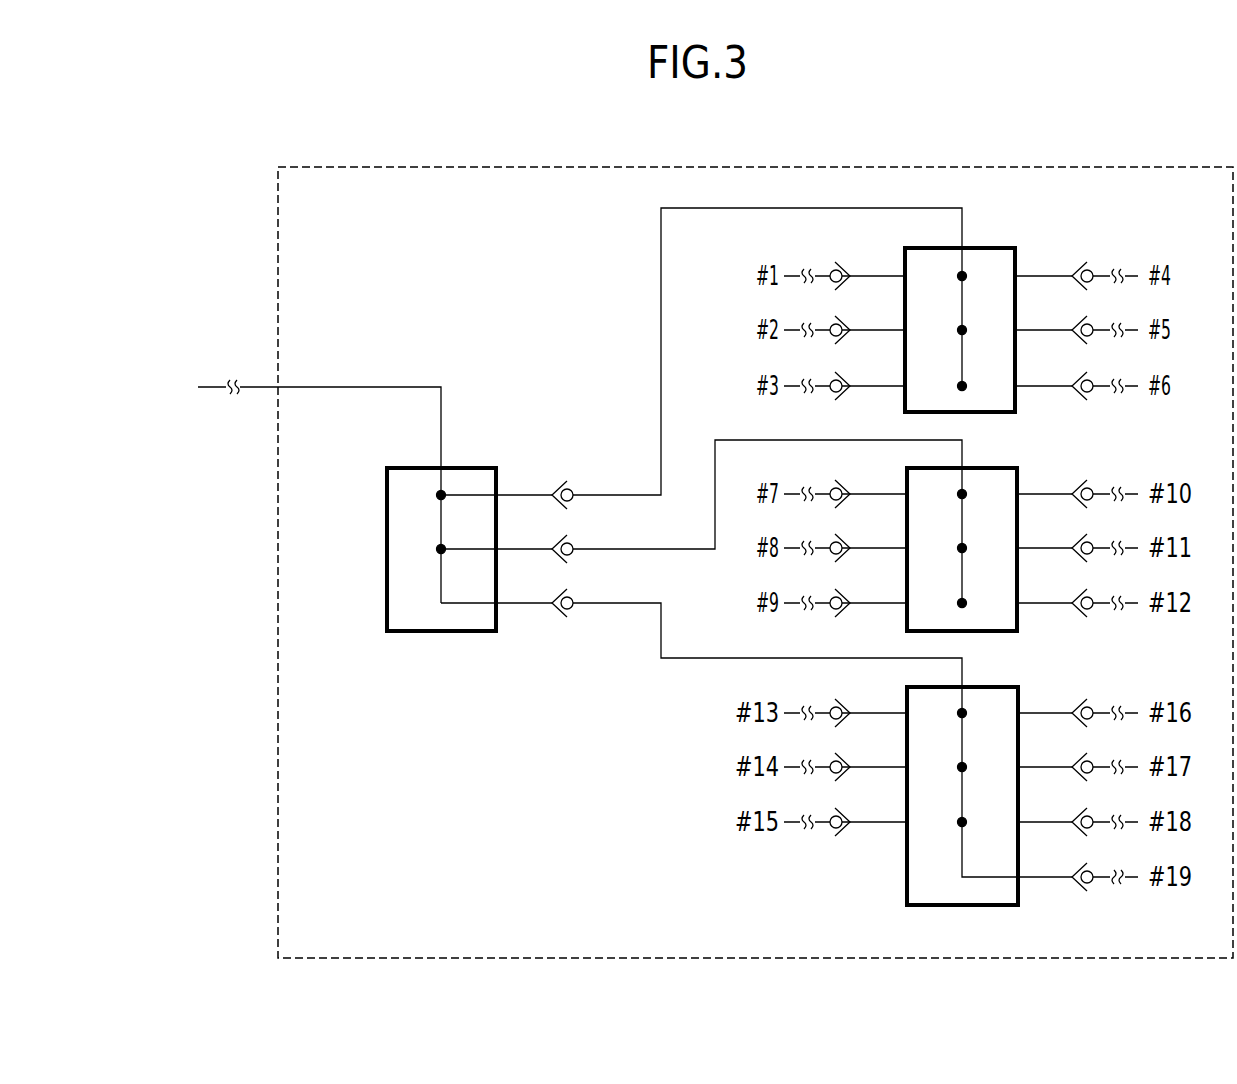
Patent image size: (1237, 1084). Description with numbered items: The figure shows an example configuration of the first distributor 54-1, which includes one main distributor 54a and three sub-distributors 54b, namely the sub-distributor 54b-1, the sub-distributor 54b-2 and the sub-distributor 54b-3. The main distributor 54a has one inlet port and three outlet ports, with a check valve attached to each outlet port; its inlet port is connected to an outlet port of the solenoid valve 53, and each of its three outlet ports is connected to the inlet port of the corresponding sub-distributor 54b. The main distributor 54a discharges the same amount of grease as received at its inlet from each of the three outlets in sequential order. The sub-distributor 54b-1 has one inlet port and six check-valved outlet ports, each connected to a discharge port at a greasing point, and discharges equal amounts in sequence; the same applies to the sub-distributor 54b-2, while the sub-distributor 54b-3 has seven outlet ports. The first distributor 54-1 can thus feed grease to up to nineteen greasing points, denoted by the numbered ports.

The solenoid valve 53 is at (303, 487).
The first distributor 54-1 is at (1058, 166).
The main distributor 54a is at (467, 467).
The sub-distributor 54b is at (1020, 555).
The sub-distributor 54b-1 is at (998, 248).
The sub-distributor 54b-2 is at (998, 468).
The sub-distributor 54b-3 is at (1000, 687).